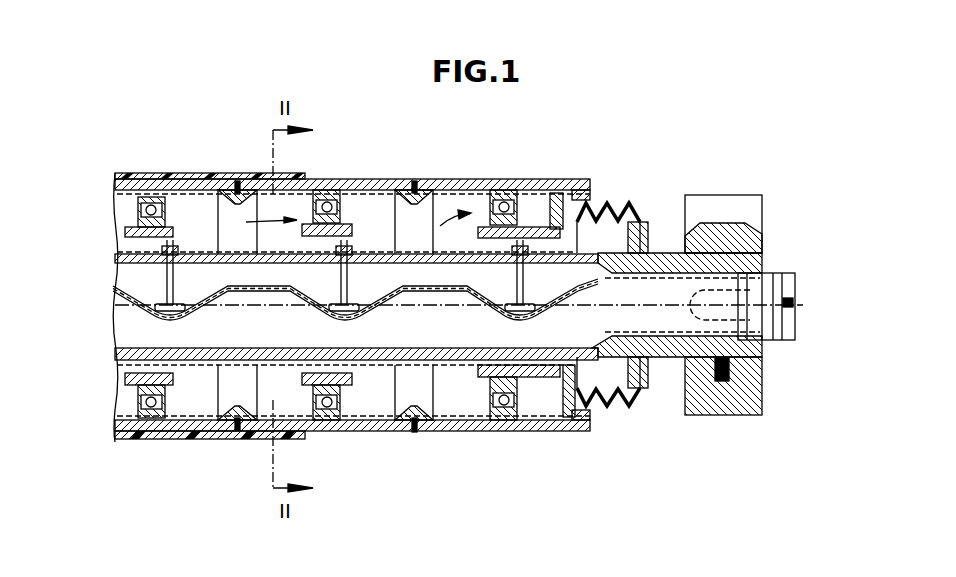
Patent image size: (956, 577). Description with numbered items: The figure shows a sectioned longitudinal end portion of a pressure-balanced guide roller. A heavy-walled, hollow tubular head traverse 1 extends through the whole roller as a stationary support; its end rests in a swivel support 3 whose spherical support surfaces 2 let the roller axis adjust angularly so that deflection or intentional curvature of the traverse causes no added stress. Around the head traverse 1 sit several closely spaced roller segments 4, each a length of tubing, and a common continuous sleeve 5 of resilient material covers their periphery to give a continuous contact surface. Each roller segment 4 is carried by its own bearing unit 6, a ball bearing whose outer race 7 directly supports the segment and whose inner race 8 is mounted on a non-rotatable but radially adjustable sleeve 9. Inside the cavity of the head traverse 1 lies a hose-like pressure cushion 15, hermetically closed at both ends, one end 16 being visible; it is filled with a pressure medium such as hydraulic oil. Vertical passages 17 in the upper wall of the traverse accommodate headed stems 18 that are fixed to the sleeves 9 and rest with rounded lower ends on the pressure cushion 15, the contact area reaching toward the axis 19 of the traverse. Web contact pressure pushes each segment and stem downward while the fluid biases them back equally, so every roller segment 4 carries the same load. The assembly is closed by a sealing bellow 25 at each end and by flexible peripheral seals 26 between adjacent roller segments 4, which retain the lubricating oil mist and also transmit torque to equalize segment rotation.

The head traverse 1 is at (658, 252).
The spherical support surfaces 2 is at (762, 226).
The swivel support 3 is at (748, 208).
The roller segment 4 is at (183, 178).
The sleeve 5 is at (228, 176).
The bearing unit 6 is at (349, 223).
The outer race 7 is at (328, 180).
The inner race 8 is at (372, 178).
The sleeve 9 is at (353, 232).
The pressure cushion 15 is at (383, 300).
The end 16 is at (772, 283).
The vertical passages 17 is at (178, 258).
The headed stem 18 is at (165, 278).
The axis 19 is at (411, 306).
The sealing bellow 25 is at (615, 405).
The peripheral seals 26 is at (431, 178).